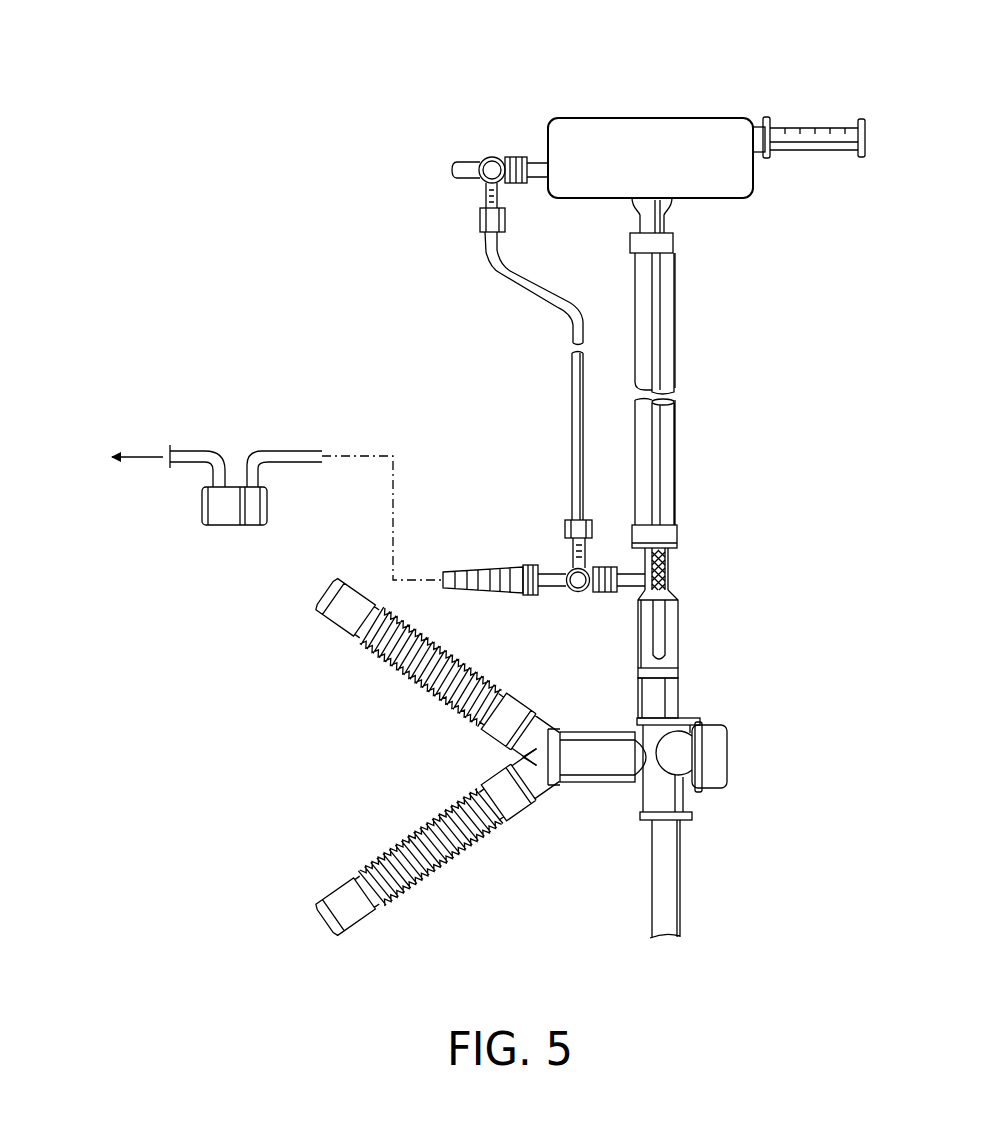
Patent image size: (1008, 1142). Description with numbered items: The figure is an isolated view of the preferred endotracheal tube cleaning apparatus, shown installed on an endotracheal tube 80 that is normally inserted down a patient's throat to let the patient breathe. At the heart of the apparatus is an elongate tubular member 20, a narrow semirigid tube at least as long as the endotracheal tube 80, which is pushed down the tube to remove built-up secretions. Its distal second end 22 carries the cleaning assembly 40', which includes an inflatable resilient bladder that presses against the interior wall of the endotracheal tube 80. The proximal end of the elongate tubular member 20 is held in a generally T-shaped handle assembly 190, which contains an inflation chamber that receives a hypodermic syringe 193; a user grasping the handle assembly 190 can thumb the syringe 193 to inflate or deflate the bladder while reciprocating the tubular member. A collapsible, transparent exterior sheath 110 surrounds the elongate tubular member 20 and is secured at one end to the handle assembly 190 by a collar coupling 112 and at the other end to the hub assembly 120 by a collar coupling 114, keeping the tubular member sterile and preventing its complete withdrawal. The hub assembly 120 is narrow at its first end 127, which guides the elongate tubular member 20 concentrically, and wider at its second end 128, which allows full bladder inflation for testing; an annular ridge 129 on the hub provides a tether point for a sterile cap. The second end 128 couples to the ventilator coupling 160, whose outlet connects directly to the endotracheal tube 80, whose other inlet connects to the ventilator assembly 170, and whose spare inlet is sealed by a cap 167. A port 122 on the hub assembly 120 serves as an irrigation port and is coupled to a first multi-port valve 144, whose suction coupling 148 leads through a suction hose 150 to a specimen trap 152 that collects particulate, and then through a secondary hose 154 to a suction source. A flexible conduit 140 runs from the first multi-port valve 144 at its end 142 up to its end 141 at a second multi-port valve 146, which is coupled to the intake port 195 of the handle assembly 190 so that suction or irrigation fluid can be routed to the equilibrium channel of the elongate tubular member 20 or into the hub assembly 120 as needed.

The handle assembly 190 is at (652, 106).
The hypodermic syringe 193 is at (797, 148).
The intake port 195 is at (537, 160).
The second multi-port valve 146 is at (488, 157).
The first end of conduit 141 is at (480, 218).
The conduit 140 is at (572, 405).
The second end of conduit 142 is at (565, 528).
The first multi-port valve 144 is at (575, 592).
The port 122 is at (622, 590).
The suction coupling 148 is at (468, 577).
The secondary hose 154 is at (202, 452).
The suction hose 150 is at (285, 452).
The specimen trap 152 is at (218, 525).
The collar coupling 112 is at (673, 243).
The exterior sheath 110 is at (676, 360).
The elongate tubular member 20 is at (668, 305).
The collar coupling 114 is at (677, 532).
The cleaning assembly 40' is at (722, 569).
The first end of hub assembly 127 is at (678, 557).
The hub assembly 120 is at (684, 638).
The second end 22 is at (662, 623).
The annular ridge 129 is at (677, 670).
The second end of hub assembly 128 is at (677, 697).
The ventilator coupling 160 is at (702, 802).
The cap 167 is at (730, 755).
The endotracheal tube 80 is at (685, 887).
The ventilator assembly 170 is at (606, 772).